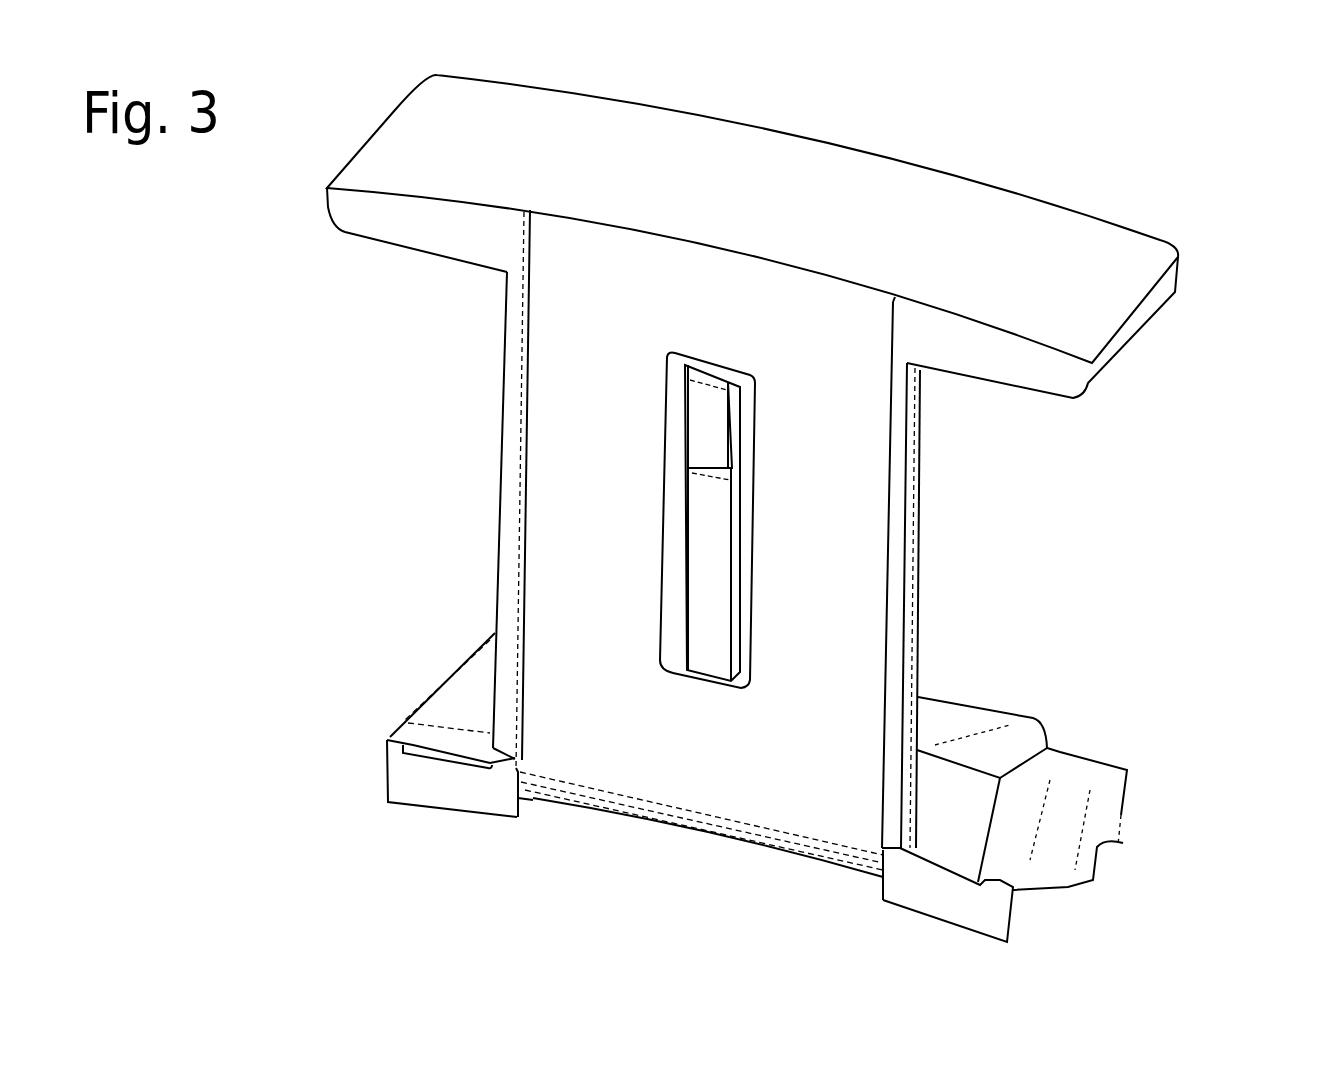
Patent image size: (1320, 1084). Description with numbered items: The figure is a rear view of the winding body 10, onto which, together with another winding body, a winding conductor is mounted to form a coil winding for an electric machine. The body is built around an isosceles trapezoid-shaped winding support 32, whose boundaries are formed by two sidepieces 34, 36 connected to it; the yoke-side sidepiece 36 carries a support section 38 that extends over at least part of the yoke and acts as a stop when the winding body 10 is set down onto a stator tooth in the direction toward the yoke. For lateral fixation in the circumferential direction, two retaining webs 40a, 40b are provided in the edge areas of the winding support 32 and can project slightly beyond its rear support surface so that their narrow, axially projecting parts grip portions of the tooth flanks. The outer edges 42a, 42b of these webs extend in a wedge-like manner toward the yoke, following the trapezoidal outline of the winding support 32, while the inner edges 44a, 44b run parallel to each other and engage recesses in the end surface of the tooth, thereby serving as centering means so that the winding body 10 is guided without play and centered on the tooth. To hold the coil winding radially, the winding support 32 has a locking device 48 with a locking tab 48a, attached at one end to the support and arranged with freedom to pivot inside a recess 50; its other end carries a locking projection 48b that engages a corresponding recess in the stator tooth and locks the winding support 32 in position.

The winding body 10 is at (1162, 568).
The winding support 32 is at (876, 577).
The sidepiece 34 is at (1097, 250).
The yoke-side sidepiece 36 is at (982, 725).
The support section 38 is at (457, 753).
The retaining web 40a is at (900, 495).
The retaining web 40b is at (510, 377).
The outer edge 42a is at (907, 632).
The outer edge 42b is at (503, 482).
The inner edge 44a is at (884, 714).
The inner edge 44b is at (524, 530).
The locking device 48 is at (777, 433).
The locking tab 48a is at (712, 613).
The locking projection 48b is at (703, 423).
The recess 50 is at (748, 495).